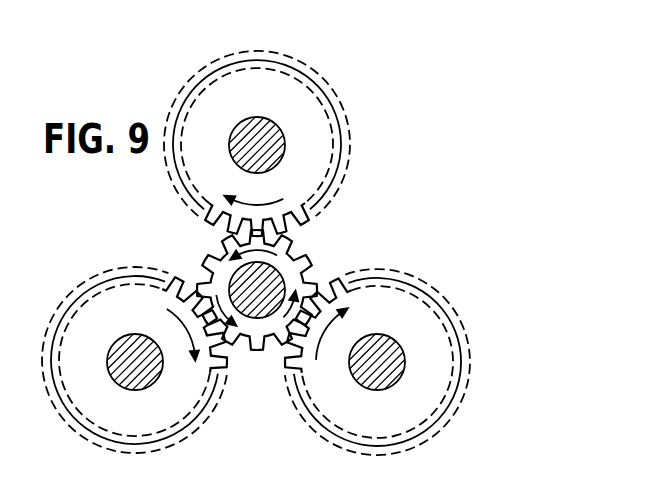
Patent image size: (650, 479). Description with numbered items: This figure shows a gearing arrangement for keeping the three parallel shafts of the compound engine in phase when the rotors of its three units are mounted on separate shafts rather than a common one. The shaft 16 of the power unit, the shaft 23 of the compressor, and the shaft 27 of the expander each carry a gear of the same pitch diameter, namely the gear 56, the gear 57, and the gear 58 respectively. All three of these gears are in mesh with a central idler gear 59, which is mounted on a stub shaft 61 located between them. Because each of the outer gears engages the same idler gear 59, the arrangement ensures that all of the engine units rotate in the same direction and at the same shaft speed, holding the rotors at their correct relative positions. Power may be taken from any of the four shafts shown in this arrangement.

The shaft 16 is at (268, 156).
The gear 56 is at (307, 186).
The idler gear 59 is at (294, 274).
The stub shaft 61 is at (262, 300).
The gear 57 is at (130, 325).
The shaft 23 is at (147, 373).
The gear 58 is at (415, 329).
The shaft 27 is at (388, 373).